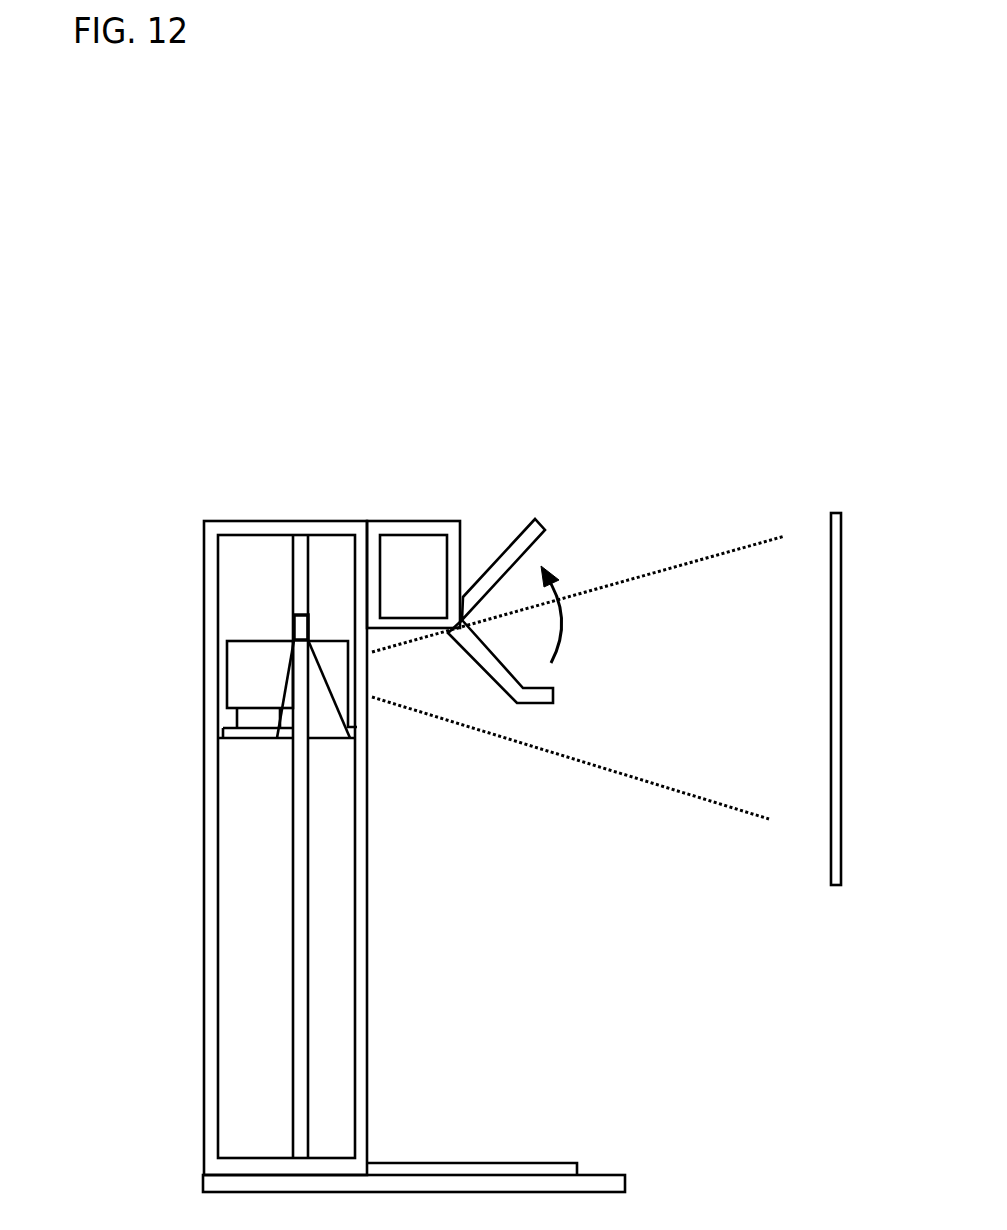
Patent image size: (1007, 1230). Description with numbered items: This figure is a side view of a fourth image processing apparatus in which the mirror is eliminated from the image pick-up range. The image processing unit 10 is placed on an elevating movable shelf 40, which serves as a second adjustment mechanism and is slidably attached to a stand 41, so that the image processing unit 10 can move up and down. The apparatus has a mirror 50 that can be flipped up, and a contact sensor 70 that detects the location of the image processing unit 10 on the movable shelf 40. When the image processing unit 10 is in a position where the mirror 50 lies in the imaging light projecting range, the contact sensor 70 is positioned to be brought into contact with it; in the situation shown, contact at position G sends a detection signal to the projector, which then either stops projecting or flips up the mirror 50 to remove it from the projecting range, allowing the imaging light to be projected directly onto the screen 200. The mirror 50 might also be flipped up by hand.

The image processing unit 10 is at (265, 655).
The movable shelf 40 is at (230, 735).
The stand 41 is at (213, 603).
The mirror 50 is at (543, 522).
The contact sensor 70 is at (305, 615).
The screen 200 is at (835, 512).